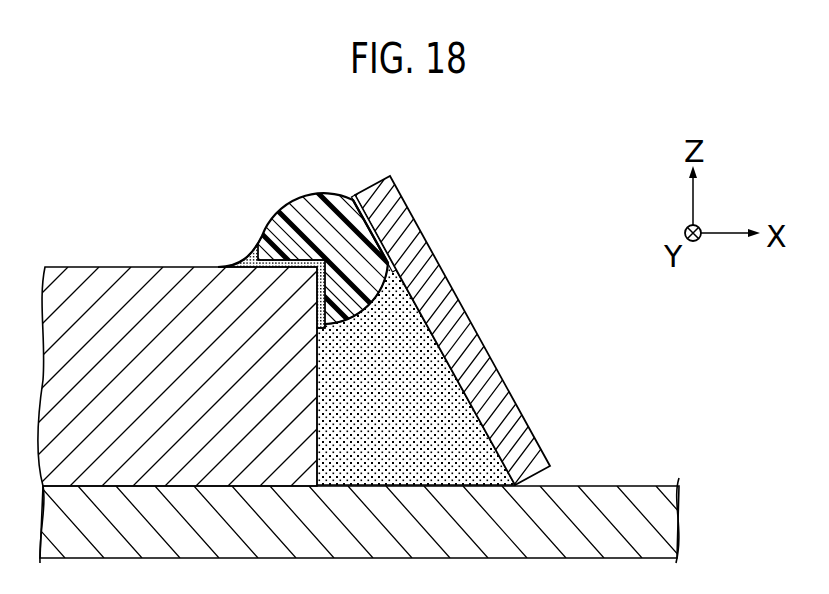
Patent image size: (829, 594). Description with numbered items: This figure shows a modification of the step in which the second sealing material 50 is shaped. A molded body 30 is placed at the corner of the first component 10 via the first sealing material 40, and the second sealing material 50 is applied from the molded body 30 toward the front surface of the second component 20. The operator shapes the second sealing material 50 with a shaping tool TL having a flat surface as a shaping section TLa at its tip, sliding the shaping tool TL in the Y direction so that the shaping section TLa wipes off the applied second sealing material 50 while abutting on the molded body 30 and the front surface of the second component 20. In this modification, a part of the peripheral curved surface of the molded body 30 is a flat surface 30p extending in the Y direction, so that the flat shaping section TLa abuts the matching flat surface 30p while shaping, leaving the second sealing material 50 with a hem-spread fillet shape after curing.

The first component 10 is at (110, 277).
The second component 20 is at (646, 486).
The molded body 30 is at (335, 192).
The flat surface 30p is at (365, 212).
The first sealing material 40 is at (273, 263).
The second sealing material 50 is at (420, 358).
The shaping tool TL is at (508, 397).
The shaping section TLa is at (364, 243).